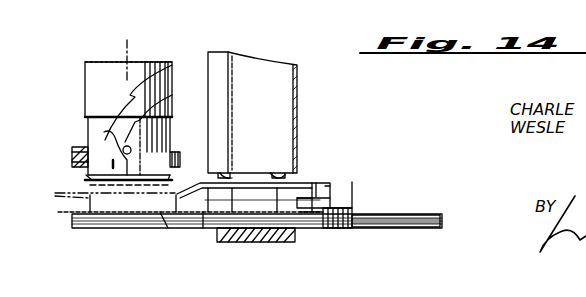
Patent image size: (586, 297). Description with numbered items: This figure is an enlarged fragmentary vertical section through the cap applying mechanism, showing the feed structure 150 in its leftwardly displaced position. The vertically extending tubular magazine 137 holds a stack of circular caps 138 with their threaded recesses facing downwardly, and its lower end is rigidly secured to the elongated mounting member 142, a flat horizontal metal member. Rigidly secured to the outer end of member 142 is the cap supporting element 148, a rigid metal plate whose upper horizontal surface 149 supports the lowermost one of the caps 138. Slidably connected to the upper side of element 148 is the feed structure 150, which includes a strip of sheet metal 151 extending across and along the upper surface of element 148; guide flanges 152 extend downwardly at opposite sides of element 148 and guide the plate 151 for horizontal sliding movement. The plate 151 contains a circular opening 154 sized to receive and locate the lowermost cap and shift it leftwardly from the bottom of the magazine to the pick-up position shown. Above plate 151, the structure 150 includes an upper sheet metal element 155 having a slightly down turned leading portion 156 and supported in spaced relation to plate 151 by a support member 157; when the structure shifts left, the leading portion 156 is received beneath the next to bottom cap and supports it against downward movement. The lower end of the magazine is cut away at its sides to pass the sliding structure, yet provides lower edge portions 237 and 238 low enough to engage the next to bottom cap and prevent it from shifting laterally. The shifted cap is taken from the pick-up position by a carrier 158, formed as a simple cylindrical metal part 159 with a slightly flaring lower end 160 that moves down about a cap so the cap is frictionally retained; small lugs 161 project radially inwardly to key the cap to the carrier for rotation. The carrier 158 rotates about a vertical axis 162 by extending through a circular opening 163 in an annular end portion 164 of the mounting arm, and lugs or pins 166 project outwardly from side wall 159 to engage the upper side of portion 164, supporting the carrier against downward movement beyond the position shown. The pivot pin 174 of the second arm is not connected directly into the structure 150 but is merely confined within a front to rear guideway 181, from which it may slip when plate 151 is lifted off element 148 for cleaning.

The tubular magazine 137 is at (302, 96).
The circular caps 138 is at (96, 198).
The elongated mounting member 142 is at (270, 242).
The cap supporting element 148 is at (427, 217).
The upper horizontal surface 149 is at (125, 214).
The feed structure 150 is at (338, 202).
The strip of sheet metal 151 is at (205, 230).
The guide flanges 152 is at (341, 229).
The circular opening 154 is at (166, 230).
The upper sheet metal element 155 is at (308, 195).
The down turned leading portion 156 is at (200, 188).
The support member 157 is at (305, 180).
The carrier 158 is at (85, 117).
The cylindrical metal part 159 is at (88, 135).
The flaring lower end 160 is at (86, 180).
The lugs 161 is at (166, 111).
The vertical axis 162 is at (127, 44).
The circular opening 163 is at (156, 98).
The annular end portion 164 is at (72, 157).
The lugs or pins 166 is at (178, 150).
The pivot pin 174 is at (316, 208).
The guideway 181 is at (330, 186).
The lower edge portion 237 is at (232, 168).
The lower edge portion 238 is at (272, 170).